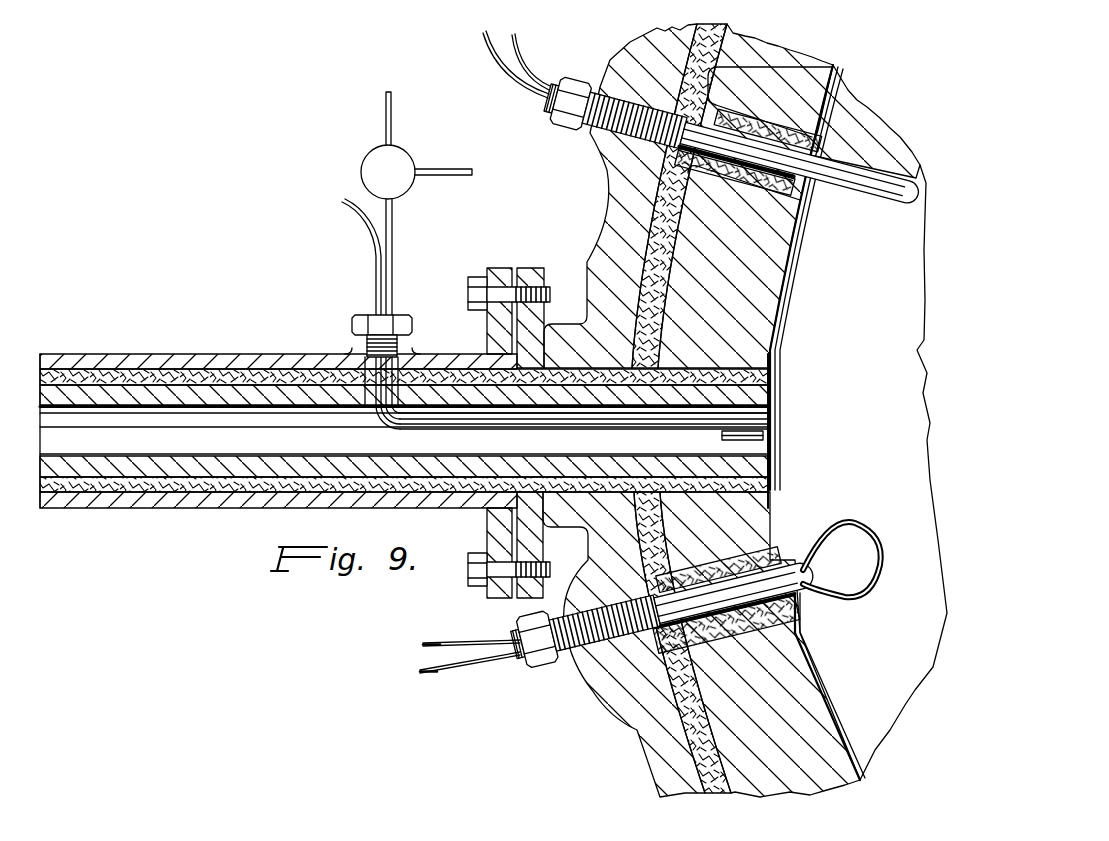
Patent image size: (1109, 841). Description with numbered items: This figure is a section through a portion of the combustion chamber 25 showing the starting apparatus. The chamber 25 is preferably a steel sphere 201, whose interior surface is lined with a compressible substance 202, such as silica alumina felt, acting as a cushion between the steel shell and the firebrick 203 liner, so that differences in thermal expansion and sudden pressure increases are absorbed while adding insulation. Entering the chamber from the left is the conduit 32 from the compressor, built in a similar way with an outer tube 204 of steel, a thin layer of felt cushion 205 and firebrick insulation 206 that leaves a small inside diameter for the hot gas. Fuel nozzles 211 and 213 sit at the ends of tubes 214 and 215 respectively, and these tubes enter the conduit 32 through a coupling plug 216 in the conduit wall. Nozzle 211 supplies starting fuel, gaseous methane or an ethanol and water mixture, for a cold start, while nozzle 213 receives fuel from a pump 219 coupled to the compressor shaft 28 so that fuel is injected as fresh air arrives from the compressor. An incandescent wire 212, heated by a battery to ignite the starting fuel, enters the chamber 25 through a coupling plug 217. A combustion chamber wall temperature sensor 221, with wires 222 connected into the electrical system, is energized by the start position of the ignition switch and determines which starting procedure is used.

The combustion chamber 25 is at (597, 410).
The compressor shaft 28 is at (445, 168).
The conduit 32 is at (312, 308).
The steel sphere 201 is at (578, 140).
The compressible substance 202 is at (597, 258).
The firebrick 203 is at (758, 265).
The outer tube 204 is at (215, 357).
The felt cushion 205 is at (188, 375).
The firebrick insulation 206 is at (141, 356).
The nozzle 211 is at (760, 440).
The incandescent wire 212 is at (857, 520).
The nozzle 213 is at (762, 423).
The tube 214 is at (400, 440).
The tube 215 is at (392, 105).
The coupling plug 216 is at (393, 317).
The coupling plug 217 is at (592, 650).
The pump 219 is at (398, 162).
The combustion chamber wall temperature sensor 221 is at (894, 200).
The wires 222 is at (548, 64).